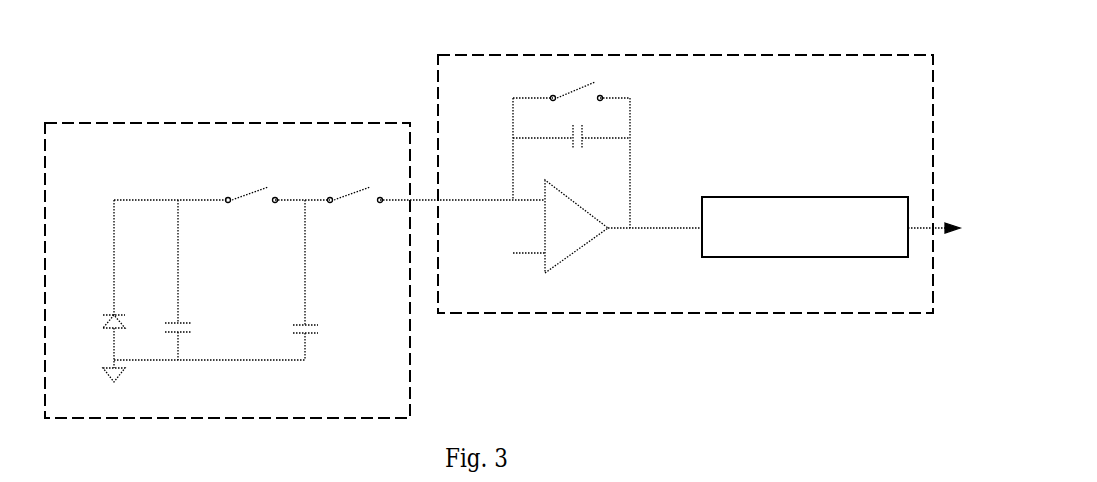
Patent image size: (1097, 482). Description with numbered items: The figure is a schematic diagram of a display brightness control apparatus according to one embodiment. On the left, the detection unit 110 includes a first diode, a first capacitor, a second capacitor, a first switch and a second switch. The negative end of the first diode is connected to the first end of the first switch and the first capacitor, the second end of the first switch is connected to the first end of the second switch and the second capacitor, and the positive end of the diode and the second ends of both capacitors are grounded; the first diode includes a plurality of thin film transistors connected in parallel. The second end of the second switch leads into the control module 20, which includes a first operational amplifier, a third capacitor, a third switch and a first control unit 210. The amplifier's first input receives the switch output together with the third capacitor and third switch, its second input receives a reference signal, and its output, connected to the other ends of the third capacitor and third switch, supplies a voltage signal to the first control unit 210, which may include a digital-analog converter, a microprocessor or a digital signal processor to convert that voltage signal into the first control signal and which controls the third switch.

The detection unit 110 is at (216, 125).
The control module 20 is at (720, 55).
The first control unit 210 is at (800, 197).